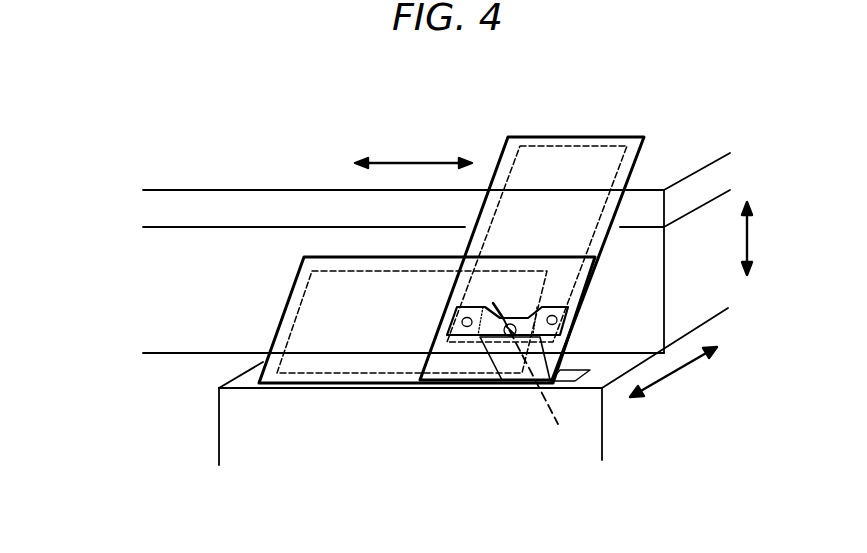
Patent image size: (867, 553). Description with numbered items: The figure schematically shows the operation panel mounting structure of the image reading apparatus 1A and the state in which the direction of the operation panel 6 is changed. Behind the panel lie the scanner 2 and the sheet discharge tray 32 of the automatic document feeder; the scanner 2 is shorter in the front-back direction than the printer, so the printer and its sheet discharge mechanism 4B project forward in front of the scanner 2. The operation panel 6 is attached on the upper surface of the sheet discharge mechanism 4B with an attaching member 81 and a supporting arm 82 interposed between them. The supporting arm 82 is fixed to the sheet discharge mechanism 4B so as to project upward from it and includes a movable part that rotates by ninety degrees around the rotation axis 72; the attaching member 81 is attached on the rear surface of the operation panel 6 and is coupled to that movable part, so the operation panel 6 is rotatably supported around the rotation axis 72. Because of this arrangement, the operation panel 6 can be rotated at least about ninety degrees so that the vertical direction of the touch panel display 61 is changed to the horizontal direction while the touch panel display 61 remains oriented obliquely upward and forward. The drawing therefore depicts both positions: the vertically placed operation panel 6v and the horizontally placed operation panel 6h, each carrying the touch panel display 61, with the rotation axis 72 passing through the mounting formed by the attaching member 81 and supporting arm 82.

The image reading apparatus 1A is at (528, 65).
The scanner 2 is at (216, 240).
The sheet discharge tray 32 is at (315, 204).
The sheet discharge mechanism 4B is at (232, 437).
The operation panel 6 is at (414, 226).
The horizontally placed operation panel 6h is at (286, 306).
The vertically placed operation panel 6v is at (562, 134).
The touch panel display 61 is at (612, 179).
The attaching member 81 is at (553, 302).
The supporting arm 82 is at (500, 357).
The rotation axis 72 is at (547, 407).